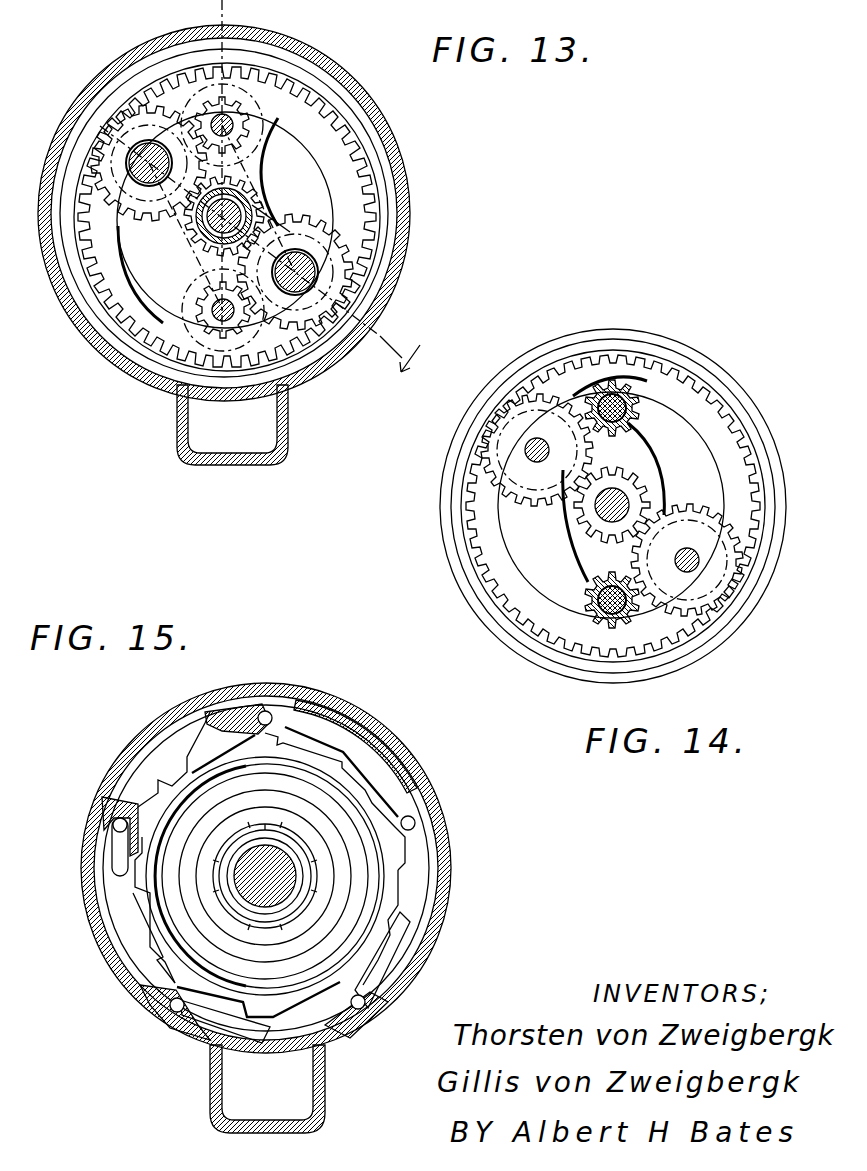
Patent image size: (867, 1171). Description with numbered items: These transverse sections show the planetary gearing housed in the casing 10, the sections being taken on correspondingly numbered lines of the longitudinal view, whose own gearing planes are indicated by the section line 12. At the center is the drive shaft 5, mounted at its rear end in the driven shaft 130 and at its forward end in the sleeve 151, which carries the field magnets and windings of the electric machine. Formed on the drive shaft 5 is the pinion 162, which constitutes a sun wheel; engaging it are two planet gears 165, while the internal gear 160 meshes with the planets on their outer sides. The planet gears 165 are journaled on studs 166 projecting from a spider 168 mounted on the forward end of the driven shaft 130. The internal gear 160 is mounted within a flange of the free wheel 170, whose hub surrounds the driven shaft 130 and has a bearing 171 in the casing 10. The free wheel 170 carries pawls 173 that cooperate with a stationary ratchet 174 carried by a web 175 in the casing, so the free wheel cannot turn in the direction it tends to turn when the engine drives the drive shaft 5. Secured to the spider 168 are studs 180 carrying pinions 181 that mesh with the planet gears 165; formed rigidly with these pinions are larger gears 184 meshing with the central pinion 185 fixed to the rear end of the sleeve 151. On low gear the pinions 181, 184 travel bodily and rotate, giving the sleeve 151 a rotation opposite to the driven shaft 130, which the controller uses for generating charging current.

In FIG. 13, the casing 10 is at (290, 40).
In FIG. 15, the casing 10 is at (119, 994).
In FIG. 13, the section line 12 is at (400, 367).
In FIG. 13, the drive shaft 5 is at (184, 230).
In FIG. 14, the drive shaft 5 is at (622, 498).
In FIG. 13, the sleeve 151 is at (262, 190).
In FIG. 13, the internal gear 160 is at (52, 322).
In FIG. 14, the internal gear 160 is at (717, 400).
In FIG. 13, the pinion 162 is at (195, 242).
In FIG. 14, the pinion 162 is at (573, 530).
In FIG. 13, the planet gears 165 is at (222, 217).
In FIG. 14, the planet gears 165 is at (532, 417).
In FIG. 13, the studs 166 is at (148, 147).
In FIG. 14, the studs 166 is at (537, 462).
In FIG. 13, the spider 168 is at (154, 253).
In FIG. 14, the spider 168 is at (633, 457).
In FIG. 13, the studs 180 is at (180, 260).
In FIG. 14, the studs 180 is at (640, 381).
In FIG. 13, the pinions 181 is at (280, 123).
In FIG. 14, the pinions 181 is at (635, 428).
In FIG. 13, the larger gears 184 is at (258, 156).
In FIG. 13, the central pinion 185 is at (271, 227).
In FIG. 15, the driven shaft 130 is at (275, 858).
In FIG. 15, the free wheel 170 is at (258, 921).
In FIG. 15, the bearing 171 is at (262, 920).
In FIG. 15, the pawls 173 is at (222, 725).
In FIG. 15, the stationary ratchet 174 is at (268, 762).
In FIG. 15, the web 175 is at (312, 800).